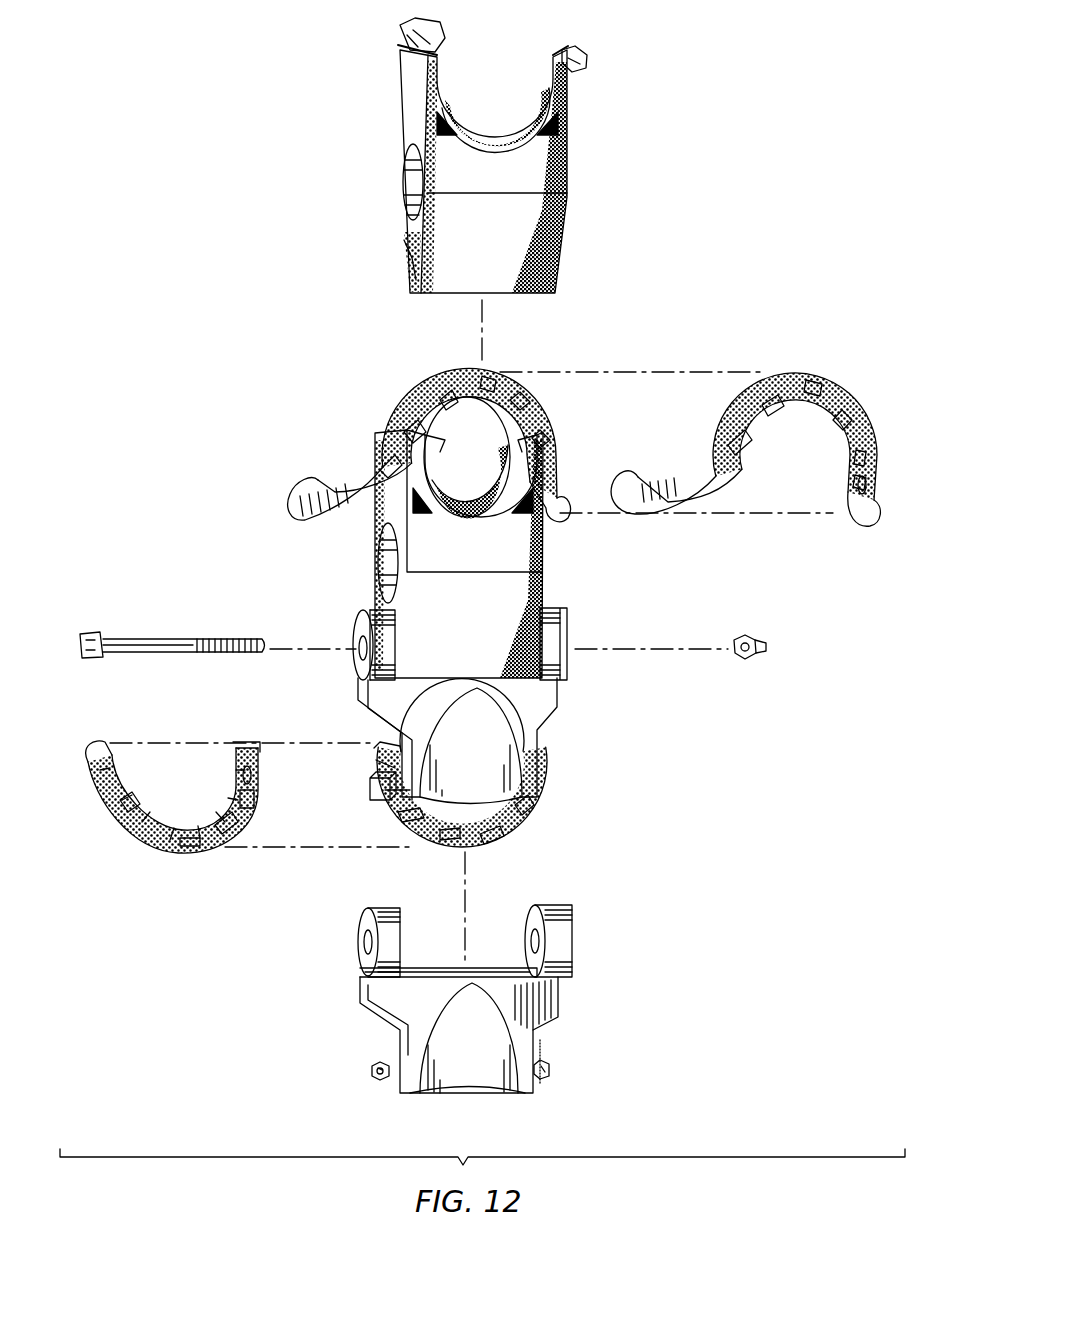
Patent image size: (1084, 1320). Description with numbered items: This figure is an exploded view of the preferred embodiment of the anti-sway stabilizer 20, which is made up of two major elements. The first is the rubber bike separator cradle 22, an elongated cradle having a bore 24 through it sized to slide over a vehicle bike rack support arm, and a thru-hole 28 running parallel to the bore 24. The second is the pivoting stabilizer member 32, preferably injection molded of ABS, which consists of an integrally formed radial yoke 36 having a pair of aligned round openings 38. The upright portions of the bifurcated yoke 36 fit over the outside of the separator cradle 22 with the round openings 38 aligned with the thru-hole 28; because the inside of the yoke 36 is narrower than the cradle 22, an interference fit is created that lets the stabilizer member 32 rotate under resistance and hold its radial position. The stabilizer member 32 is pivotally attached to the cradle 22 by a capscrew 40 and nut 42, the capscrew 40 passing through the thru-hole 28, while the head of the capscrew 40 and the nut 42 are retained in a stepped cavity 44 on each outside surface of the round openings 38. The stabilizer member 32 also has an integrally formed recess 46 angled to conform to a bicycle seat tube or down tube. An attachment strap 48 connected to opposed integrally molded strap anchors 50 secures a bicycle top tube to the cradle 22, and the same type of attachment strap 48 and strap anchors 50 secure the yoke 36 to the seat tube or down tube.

The anti-sway stabilizer 20 is at (325, 448).
The rubber bike separator cradle 22 is at (567, 197).
The bore 24 is at (405, 178).
The thru-hole 28 is at (412, 258).
The pivoting stabilizer member 32 is at (358, 1032).
The radial yoke 36 is at (533, 1040).
The round openings 38 is at (363, 943).
The capscrew 40 is at (185, 638).
The nut 42 is at (758, 637).
The stepped cavity 44 is at (368, 962).
The recess 46 is at (470, 1082).
The attachment strap 48 is at (795, 372).
The strap anchors 50 is at (400, 28).